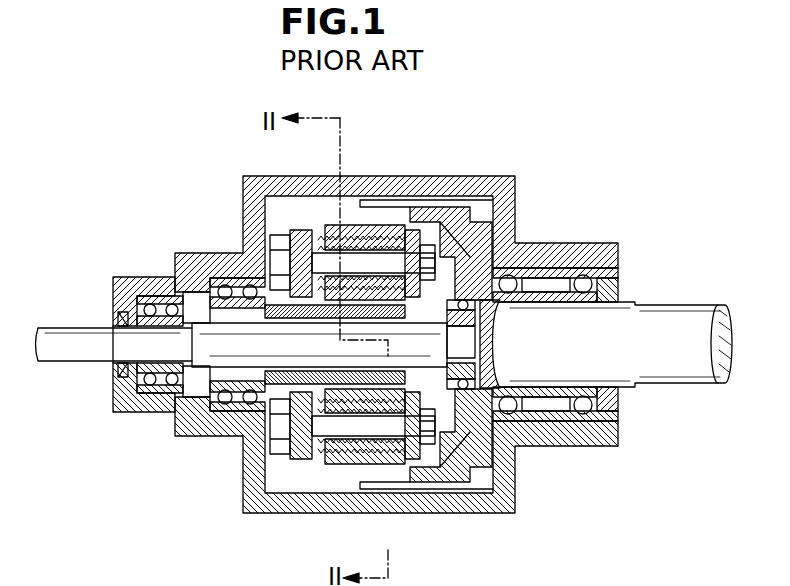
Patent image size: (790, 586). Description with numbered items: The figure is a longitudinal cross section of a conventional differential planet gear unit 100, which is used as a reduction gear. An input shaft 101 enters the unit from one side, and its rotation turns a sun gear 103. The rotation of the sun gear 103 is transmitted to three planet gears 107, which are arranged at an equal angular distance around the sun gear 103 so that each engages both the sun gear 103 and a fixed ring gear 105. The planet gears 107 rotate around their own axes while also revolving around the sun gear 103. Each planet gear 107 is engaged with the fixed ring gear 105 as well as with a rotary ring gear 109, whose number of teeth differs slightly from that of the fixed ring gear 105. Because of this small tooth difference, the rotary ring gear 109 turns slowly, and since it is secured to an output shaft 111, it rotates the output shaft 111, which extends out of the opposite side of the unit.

The differential planet gear unit 100 is at (432, 162).
The input shaft 101 is at (80, 363).
The sun gear 103 is at (325, 330).
The fixed ring gear 105 is at (355, 177).
The planet gears 107 is at (328, 177).
The rotary ring gear 109 is at (452, 478).
The output shaft 111 is at (673, 385).